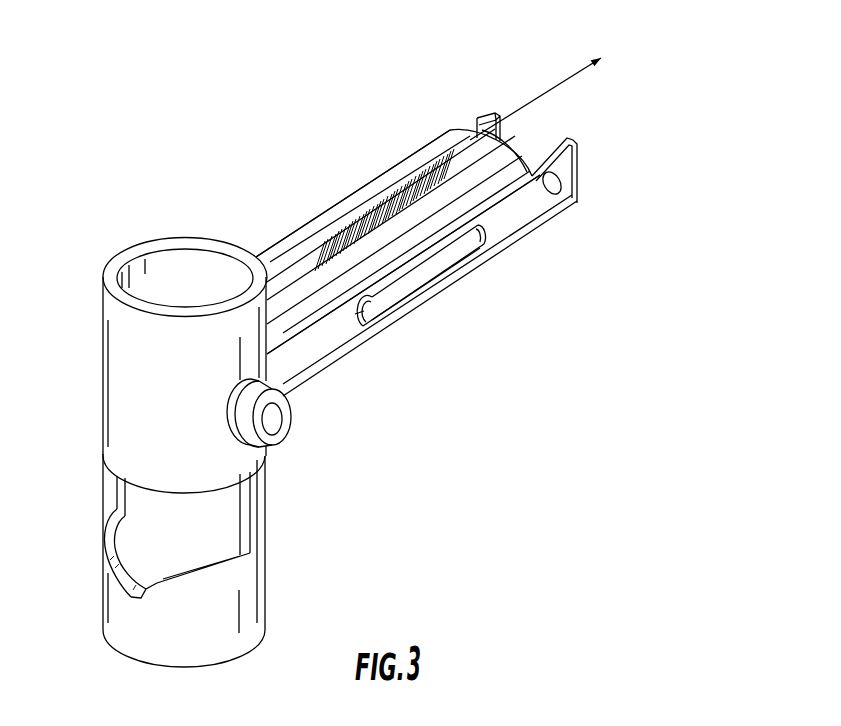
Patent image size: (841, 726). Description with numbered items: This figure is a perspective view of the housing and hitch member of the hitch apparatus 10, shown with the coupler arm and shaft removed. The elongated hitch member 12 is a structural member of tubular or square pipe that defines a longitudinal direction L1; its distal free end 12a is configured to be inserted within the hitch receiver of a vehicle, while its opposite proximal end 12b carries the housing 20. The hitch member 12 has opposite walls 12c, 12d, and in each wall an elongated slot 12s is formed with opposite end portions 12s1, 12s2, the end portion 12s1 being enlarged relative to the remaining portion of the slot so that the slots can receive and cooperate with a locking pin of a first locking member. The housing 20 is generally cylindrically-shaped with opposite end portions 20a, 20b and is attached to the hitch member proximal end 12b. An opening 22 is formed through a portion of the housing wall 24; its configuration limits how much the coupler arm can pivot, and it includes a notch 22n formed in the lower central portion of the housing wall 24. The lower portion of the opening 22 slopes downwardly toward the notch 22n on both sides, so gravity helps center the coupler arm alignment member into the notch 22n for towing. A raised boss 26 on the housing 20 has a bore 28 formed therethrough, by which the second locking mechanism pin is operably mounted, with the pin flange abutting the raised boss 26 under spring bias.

The hitch apparatus 10 is at (349, 87).
The hitch member 12 is at (396, 165).
The distal free end 12a is at (483, 116).
The proximal end 12b is at (308, 351).
The wall 12c is at (533, 207).
The wall 12d is at (311, 221).
The slot 12s is at (433, 271).
The end portion 12s1 is at (368, 311).
The end portion 12s2 is at (488, 241).
The longitudinal direction L1 is at (545, 93).
The housing 20 is at (185, 235).
The end portion 20a is at (252, 618).
The end portion 20b is at (112, 325).
The opening 22 is at (112, 524).
The notch 22n is at (125, 578).
The housing wall 24 is at (130, 413).
The raised boss 26 is at (284, 422).
The bore 28 is at (274, 428).